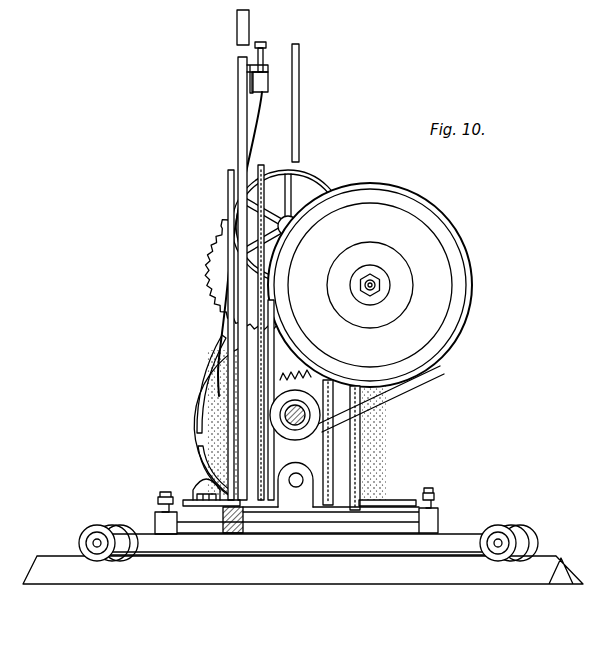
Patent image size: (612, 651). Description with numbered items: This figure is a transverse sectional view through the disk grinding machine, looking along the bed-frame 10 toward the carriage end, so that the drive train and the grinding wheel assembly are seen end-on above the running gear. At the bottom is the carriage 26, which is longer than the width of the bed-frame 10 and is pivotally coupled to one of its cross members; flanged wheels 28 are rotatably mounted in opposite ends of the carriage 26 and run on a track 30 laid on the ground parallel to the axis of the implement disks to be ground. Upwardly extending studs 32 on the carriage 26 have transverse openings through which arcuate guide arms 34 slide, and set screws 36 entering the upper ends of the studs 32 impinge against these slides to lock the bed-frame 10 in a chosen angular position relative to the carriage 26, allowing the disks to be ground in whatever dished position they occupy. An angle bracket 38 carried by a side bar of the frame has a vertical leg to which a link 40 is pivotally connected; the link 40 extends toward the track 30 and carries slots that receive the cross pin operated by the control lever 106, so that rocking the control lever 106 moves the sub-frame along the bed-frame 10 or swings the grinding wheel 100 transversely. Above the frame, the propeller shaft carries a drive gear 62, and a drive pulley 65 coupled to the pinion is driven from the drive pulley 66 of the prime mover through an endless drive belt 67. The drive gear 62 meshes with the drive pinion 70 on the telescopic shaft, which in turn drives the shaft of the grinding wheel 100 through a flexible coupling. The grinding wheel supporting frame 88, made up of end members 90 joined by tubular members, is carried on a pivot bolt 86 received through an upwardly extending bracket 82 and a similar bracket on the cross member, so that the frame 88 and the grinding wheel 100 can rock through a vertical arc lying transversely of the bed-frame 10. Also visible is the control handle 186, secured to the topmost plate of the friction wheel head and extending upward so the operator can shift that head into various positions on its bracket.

The bed-frame 10 is at (386, 498).
The carriage 26 is at (368, 545).
The flanged wheels 28 is at (97, 527).
The track 30 is at (158, 572).
The studs 32 is at (440, 520).
The arcuate guide arms 34 is at (397, 506).
The set screws 36 is at (433, 492).
The angle bracket 38 is at (244, 535).
The link 40 is at (227, 483).
The drive gear 62 is at (325, 167).
The drive pulley 65 is at (455, 317).
The drive pulley 66 is at (294, 439).
The endless drive belt 67 is at (398, 392).
The drive pinion 70 is at (285, 343).
The bracket 82 is at (292, 500).
The pivot bolt 86 is at (299, 486).
The grinding wheel supporting frame 88 is at (343, 430).
The end members 90 is at (318, 462).
The grinding wheel 100 is at (205, 296).
The control lever 106 is at (233, 32).
The control handle 186 is at (302, 97).